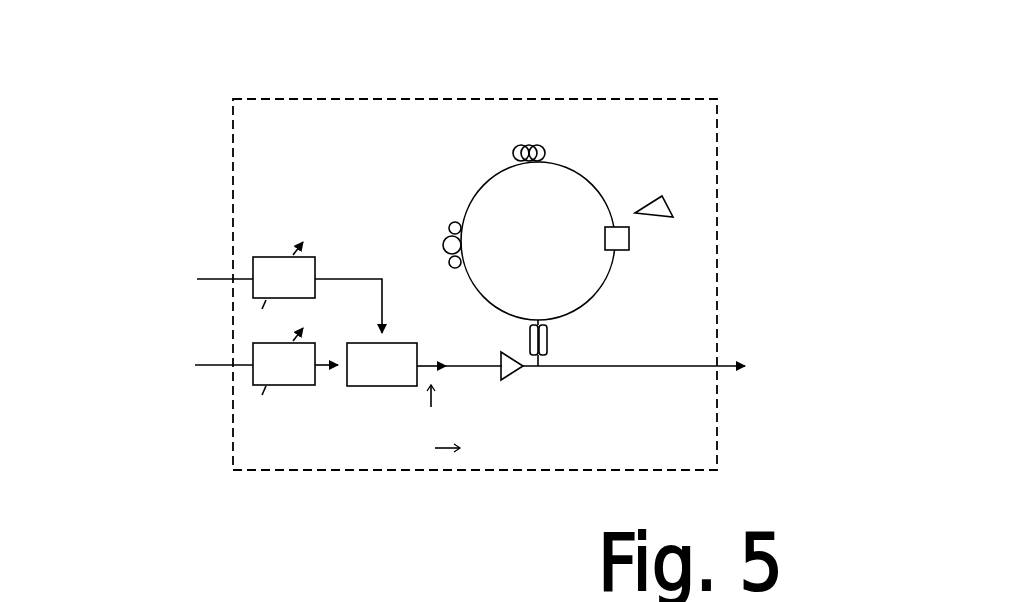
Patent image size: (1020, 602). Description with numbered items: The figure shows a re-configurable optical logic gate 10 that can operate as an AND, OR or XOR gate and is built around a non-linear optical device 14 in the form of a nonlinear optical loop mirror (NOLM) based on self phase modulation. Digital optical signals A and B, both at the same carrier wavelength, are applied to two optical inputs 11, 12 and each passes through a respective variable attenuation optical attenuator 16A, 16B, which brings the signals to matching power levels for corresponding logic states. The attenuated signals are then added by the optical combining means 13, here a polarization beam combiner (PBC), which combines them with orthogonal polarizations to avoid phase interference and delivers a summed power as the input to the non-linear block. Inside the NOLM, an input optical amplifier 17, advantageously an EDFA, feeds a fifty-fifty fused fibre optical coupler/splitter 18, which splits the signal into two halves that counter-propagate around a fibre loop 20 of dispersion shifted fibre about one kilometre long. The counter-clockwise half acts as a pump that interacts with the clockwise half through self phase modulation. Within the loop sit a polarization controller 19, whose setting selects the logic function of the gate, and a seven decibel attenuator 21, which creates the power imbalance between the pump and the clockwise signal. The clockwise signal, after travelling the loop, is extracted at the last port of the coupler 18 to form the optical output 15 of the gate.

The optical logic gate 10 is at (717, 118).
The optical input 11 is at (208, 283).
The optical input 12 is at (215, 372).
The optical combining means 13 is at (380, 388).
The non-linear optical device 14 is at (660, 207).
The optical output 15 is at (748, 363).
The variable attenuation optical attenuator 16A is at (280, 240).
The variable attenuation optical attenuator 16B is at (292, 390).
The input optical amplifier 17 is at (521, 379).
The 50:50 optical coupler/splitter 18 is at (550, 343).
The polarization controller 19 is at (413, 220).
The fibre loop 20 is at (527, 108).
The 7 dB attenuator 21 is at (618, 220).